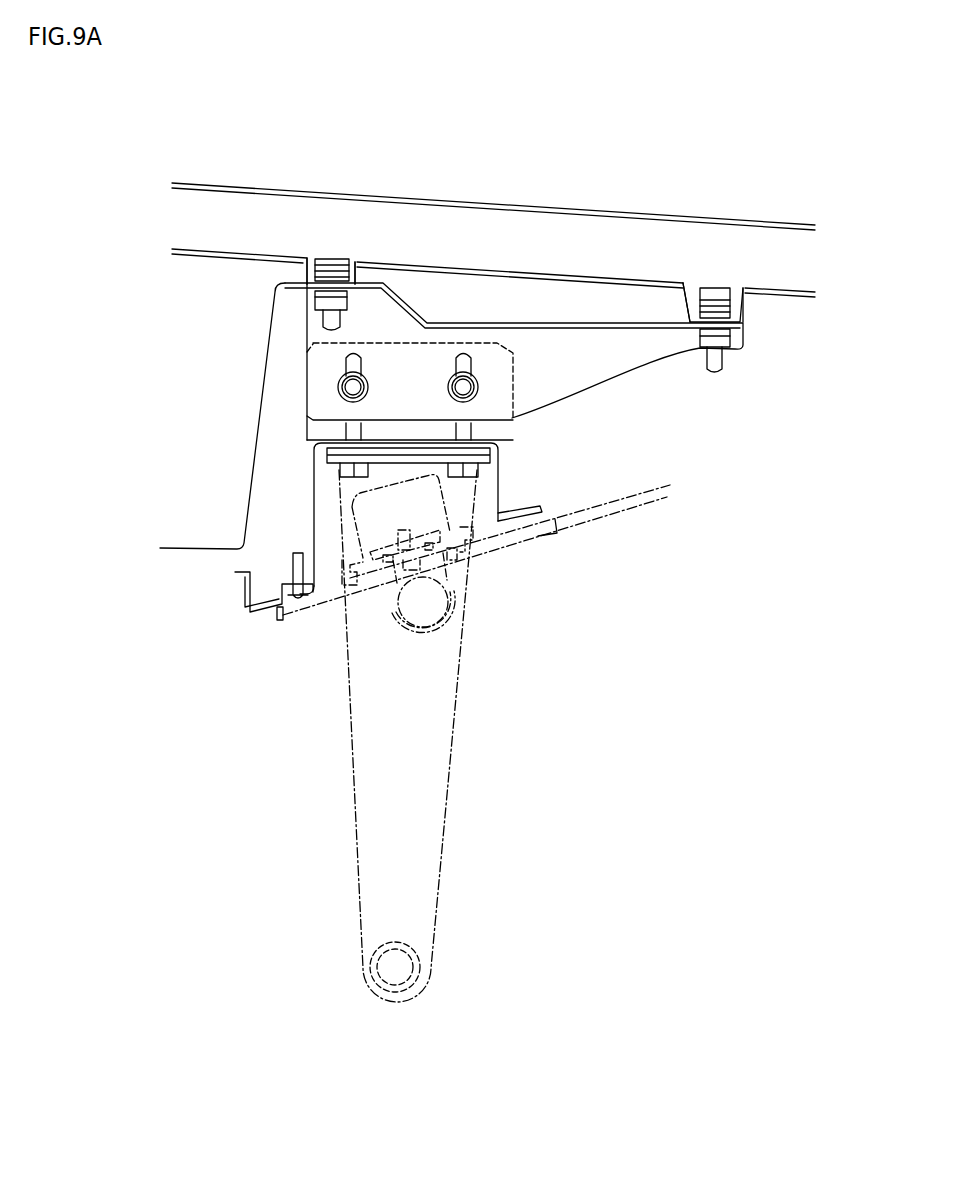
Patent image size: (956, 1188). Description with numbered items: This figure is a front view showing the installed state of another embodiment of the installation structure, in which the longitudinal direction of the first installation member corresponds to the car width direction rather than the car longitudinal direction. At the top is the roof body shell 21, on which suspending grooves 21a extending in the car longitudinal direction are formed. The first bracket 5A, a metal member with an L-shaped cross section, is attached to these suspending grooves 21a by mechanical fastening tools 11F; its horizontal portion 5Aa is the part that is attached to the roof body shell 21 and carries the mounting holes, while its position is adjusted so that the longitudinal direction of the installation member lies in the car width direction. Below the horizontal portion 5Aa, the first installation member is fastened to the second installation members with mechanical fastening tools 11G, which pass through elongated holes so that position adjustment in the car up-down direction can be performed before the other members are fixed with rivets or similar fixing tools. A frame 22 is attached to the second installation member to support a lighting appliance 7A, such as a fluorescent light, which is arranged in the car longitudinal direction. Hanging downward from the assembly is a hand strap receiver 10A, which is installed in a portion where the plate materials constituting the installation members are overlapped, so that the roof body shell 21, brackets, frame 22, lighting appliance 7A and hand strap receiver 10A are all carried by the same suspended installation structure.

The roof body shell 21 is at (608, 209).
The mechanical fastening tools 11F is at (333, 272).
The suspending grooves 21a is at (340, 272).
The first brackets 5A is at (452, 322).
The horizontal portion 5Aa is at (470, 343).
The mechanical fastening tools 11G is at (463, 392).
The frames 22 is at (503, 477).
The lighting appliances 7A is at (393, 612).
The hand strap receiver 10A is at (453, 780).